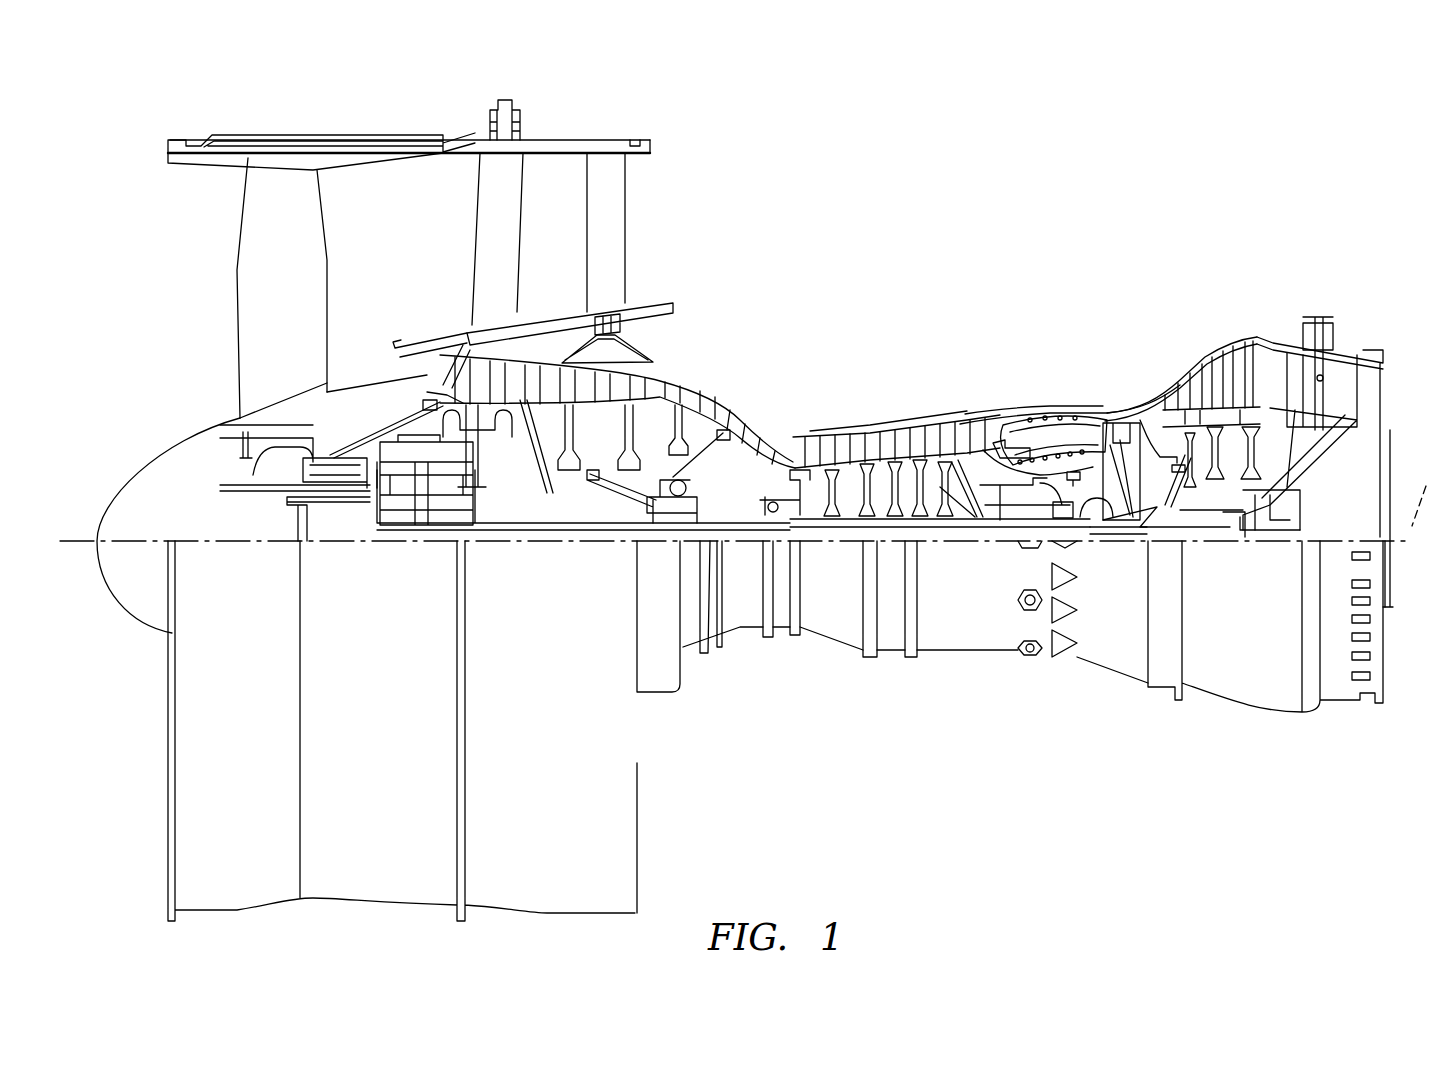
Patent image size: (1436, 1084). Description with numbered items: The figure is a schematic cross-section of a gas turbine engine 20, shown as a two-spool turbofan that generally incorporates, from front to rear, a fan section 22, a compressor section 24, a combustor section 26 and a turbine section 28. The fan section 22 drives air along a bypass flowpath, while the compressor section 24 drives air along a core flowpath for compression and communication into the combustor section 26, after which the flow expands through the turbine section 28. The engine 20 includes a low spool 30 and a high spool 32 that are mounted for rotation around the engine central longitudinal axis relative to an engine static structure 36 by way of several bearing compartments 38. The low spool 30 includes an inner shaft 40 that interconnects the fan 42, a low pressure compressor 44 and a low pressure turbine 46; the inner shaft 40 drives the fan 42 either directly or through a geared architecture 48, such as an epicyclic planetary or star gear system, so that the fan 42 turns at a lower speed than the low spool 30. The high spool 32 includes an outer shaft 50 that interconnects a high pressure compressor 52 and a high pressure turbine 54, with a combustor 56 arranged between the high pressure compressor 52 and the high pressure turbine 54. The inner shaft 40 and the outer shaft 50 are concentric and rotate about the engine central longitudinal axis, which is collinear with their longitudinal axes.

The gas turbine engine 20 is at (747, 486).
The fan section 22 is at (462, 112).
The compressor section 24 is at (470, 278).
The combustor section 26 is at (1100, 278).
The turbine section 28 is at (1320, 278).
The low spool 30 is at (743, 485).
The high spool 32 is at (963, 447).
The engine static structure 36 is at (888, 653).
The bearing compartments 38 is at (205, 618).
The inner shaft 40 is at (1083, 523).
The fan 42 is at (302, 313).
The low pressure compressor 44 is at (652, 386).
The low pressure turbine 46 is at (1231, 371).
The geared architecture 48 is at (417, 490).
The outer shaft 50 is at (1097, 498).
The high pressure compressor 52 is at (812, 450).
The high pressure turbine 54 is at (1122, 432).
The combustor 56 is at (1055, 443).